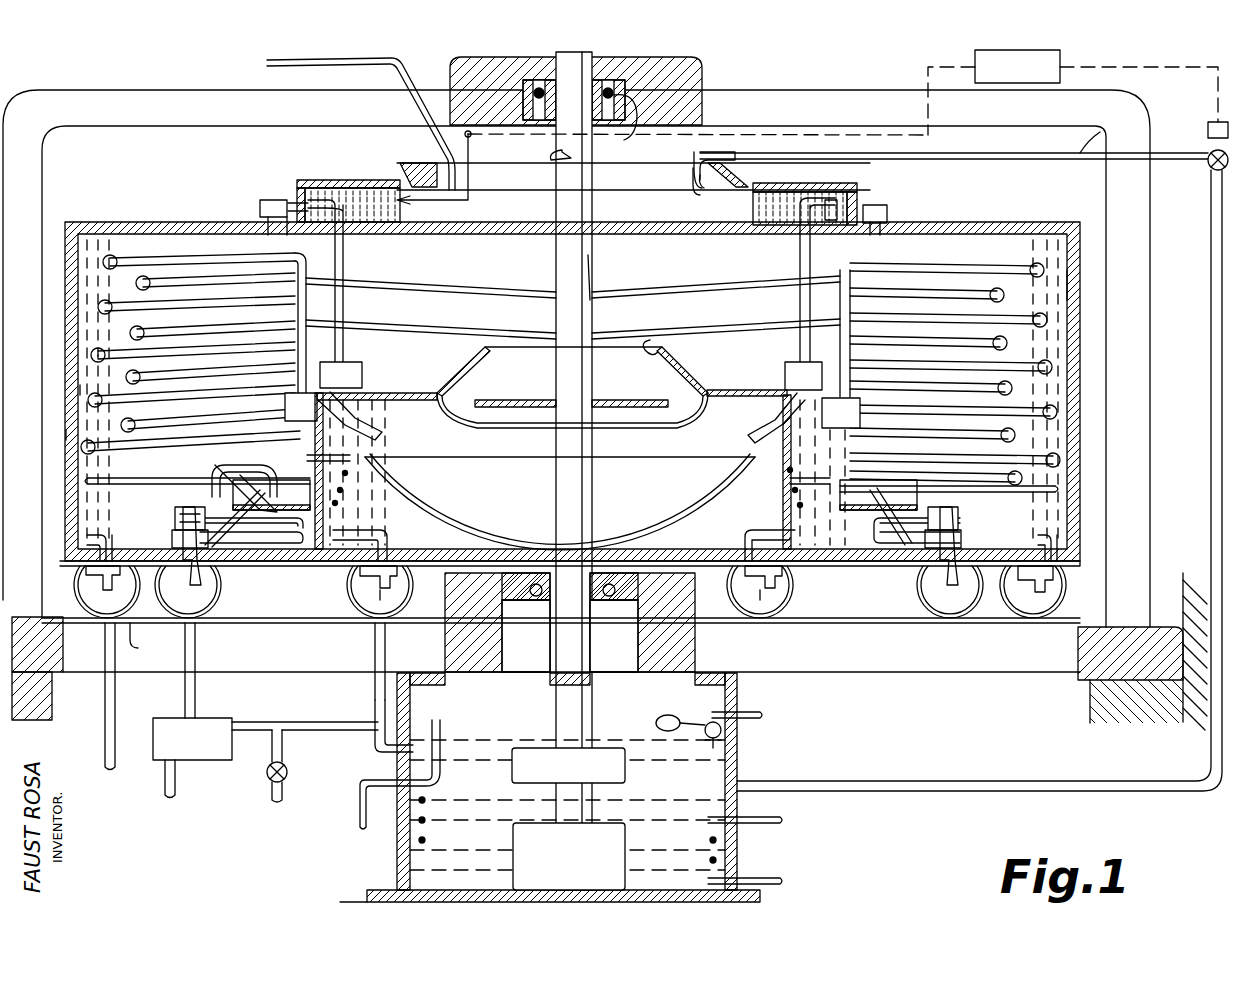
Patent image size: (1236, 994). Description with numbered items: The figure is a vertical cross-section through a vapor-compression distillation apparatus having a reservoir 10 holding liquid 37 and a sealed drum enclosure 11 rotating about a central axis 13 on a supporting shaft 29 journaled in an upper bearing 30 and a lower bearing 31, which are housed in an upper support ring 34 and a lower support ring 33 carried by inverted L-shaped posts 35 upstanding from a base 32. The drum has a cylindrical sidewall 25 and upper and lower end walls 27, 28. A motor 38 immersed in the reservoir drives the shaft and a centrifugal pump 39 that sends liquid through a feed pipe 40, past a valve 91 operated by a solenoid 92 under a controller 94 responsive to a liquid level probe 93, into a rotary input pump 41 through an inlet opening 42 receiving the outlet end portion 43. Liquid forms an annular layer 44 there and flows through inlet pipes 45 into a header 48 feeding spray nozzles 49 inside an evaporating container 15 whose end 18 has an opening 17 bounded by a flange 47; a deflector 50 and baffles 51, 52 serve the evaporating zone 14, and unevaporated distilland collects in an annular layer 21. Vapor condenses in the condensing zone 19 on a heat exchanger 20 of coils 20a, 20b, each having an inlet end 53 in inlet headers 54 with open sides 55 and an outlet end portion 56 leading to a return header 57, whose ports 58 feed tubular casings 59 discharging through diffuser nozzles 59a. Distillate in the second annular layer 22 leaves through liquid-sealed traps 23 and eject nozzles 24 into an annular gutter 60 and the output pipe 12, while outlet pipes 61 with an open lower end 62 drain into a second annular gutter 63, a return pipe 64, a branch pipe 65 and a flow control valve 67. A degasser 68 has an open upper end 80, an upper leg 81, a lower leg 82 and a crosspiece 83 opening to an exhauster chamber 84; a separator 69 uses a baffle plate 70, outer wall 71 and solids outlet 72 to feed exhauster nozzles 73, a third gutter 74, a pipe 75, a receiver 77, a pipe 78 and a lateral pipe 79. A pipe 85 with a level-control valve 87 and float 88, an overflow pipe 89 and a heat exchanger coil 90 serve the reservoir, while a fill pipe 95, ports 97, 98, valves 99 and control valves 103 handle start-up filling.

The reservoir 10 is at (752, 853).
The enclosure 11 is at (1088, 283).
The output pipe 12 is at (105, 712).
The central axis 13 is at (594, 58).
The evaporating zone 14 is at (487, 442).
The evaporating container 15 is at (712, 388).
The opening 17 is at (648, 338).
The end 18 is at (447, 383).
The condensing zone 19 is at (260, 320).
The heat exchanger 20 is at (177, 269).
The coil 20a is at (290, 258).
The coil 20b is at (98, 355).
The annular layer 21 is at (370, 498).
The second annular layer 22 is at (80, 388).
The liquid-sealed traps 23 is at (113, 530).
The eject nozzles 24 is at (100, 590).
The cylindrical sidewall 25 is at (66, 428).
The upper end wall 27 is at (180, 222).
The lower end wall 28 is at (285, 545).
The supporting shaft 29 is at (596, 270).
The bearing 30 is at (604, 127).
The bearing 31 is at (598, 630).
The base 32 is at (1085, 685).
The lower support ring 33 is at (697, 655).
The upper support ring 34 is at (697, 72).
The posts 35 is at (60, 90).
The liquid 37 is at (740, 770).
The motor 38 is at (569, 856).
The centrifugal pump 39 is at (568, 765).
The feed pipe 40 is at (1103, 132).
The rotary input pump 41 is at (876, 189).
The inlet opening 42 is at (722, 140).
The outlet end portion 43 is at (690, 173).
The annular layer 44 is at (753, 208).
The inlet pipes 45 is at (345, 268).
The flange 47 is at (680, 348).
The header 48 is at (765, 397).
The spray nozzle 49 is at (385, 418).
The deflector 50 is at (668, 520).
The baffle 51 is at (515, 400).
The baffle 52 is at (668, 430).
The inlet end 53 is at (268, 494).
The inlet headers 54 is at (800, 305).
The open sides 55 is at (318, 562).
The outlet end portion 56 is at (845, 300).
The return header 57 is at (285, 410).
The ports 58 is at (362, 375).
The tubular casings 59 is at (372, 456).
The diffuser nozzles 59a is at (390, 436).
The annular gutter 60 is at (140, 637).
The outlet pipes 61 is at (390, 535).
The open lower end 62 is at (383, 600).
The second annular gutter 63 is at (340, 625).
The return pipe 64 is at (375, 690).
The branch pipe 65 is at (284, 746).
The flow control valve 67 is at (288, 772).
The degasser 68 is at (372, 477).
The separator 69 is at (182, 518).
The baffle plate 70 is at (965, 525).
The outer wall 71 is at (248, 545).
The solids outlet 72 is at (230, 505).
The exhauster nozzles 73 is at (190, 580).
The third gutter 74 is at (197, 645).
The pipe 75 is at (197, 690).
The receiver 77 is at (210, 760).
The pipe 78 is at (165, 774).
The lateral pipe 79 is at (245, 722).
The open upper end 80 is at (307, 458).
The upper leg 81 is at (130, 485).
The lower leg 82 is at (267, 600).
The crosspiece 83 is at (212, 478).
The exhauster chamber 84 is at (172, 540).
The pipe 85 is at (760, 708).
The level-control valve 87 is at (713, 722).
The float 88 is at (660, 718).
The overflow pipe 89 is at (442, 720).
The heat exchanger coil 90 is at (740, 857).
The valve 91 is at (1209, 153).
The solenoid 92 is at (1205, 115).
The liquid level probe 93 is at (440, 210).
The controller 94 is at (1073, 92).
The fill pipe 95 is at (396, 60).
The port 97 is at (318, 186).
The port 98 is at (268, 233).
The valves 99 is at (268, 200).
The control valves 103 is at (86, 572).